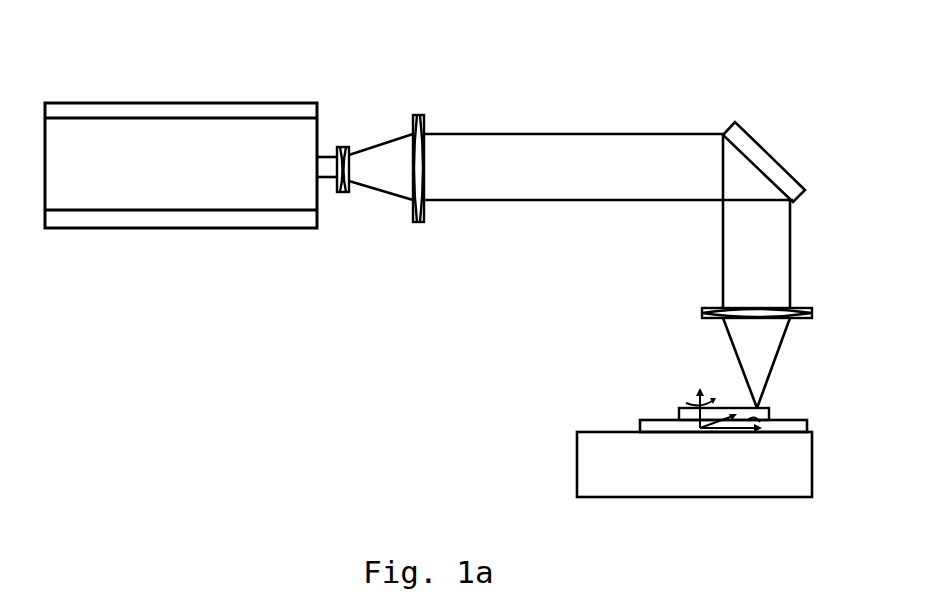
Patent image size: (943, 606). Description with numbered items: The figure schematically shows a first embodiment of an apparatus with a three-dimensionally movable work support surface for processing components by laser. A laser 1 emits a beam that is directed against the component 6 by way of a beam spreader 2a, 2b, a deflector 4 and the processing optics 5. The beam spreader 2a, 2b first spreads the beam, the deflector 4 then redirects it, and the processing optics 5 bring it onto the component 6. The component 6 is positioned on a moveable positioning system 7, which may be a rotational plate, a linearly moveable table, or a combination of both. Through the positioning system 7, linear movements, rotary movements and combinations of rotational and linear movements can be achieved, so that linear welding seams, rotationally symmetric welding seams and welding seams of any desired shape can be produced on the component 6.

The laser 1 is at (182, 97).
The beam spreader 2a is at (343, 133).
The beam spreader 2b is at (419, 97).
The deflector 4 is at (763, 125).
The processing optics 5 is at (693, 312).
The component 6 is at (670, 416).
The positioning system 7 is at (553, 463).